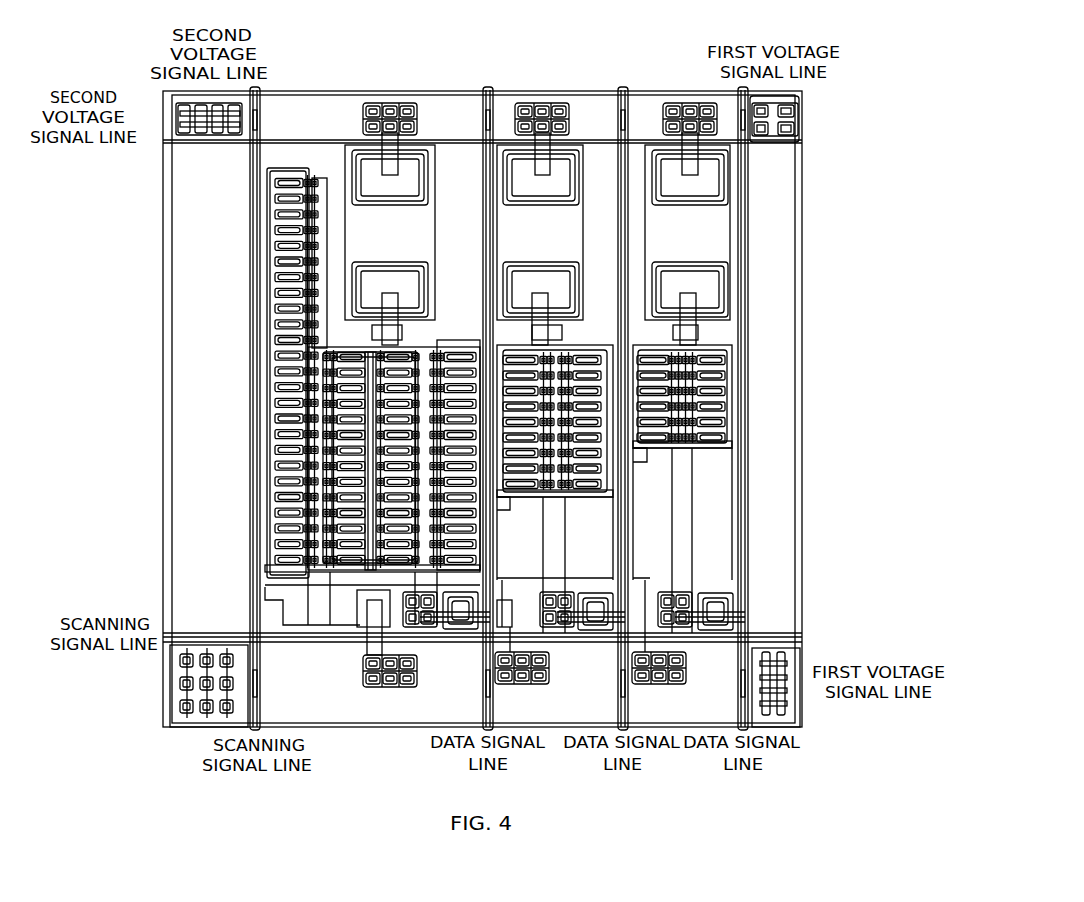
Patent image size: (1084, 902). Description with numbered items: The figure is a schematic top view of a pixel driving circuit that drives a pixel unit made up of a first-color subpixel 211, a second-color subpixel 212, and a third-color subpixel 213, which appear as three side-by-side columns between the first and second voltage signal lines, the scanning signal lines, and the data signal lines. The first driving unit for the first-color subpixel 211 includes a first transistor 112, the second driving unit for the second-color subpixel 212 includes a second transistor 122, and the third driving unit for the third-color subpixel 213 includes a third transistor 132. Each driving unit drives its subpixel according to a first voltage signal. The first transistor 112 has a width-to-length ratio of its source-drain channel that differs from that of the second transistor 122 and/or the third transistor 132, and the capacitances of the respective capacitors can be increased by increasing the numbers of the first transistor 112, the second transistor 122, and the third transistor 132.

The first transistor 112 is at (288, 183).
The second transistor 122 is at (515, 487).
The third transistor 132 is at (713, 372).
The first-color subpixel 211 is at (360, 235).
The second-color subpixel 212 is at (505, 235).
The third-color subpixel 213 is at (653, 238).